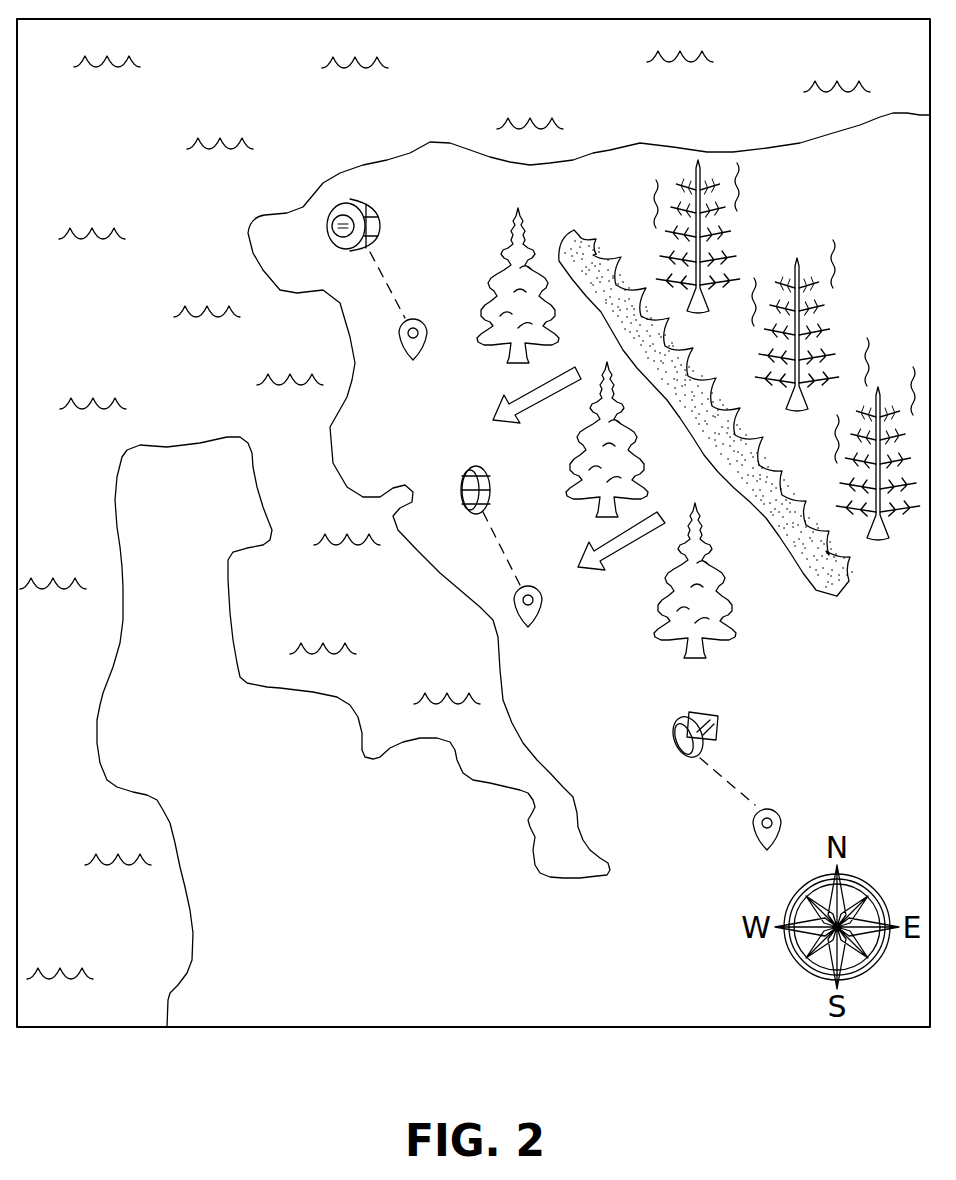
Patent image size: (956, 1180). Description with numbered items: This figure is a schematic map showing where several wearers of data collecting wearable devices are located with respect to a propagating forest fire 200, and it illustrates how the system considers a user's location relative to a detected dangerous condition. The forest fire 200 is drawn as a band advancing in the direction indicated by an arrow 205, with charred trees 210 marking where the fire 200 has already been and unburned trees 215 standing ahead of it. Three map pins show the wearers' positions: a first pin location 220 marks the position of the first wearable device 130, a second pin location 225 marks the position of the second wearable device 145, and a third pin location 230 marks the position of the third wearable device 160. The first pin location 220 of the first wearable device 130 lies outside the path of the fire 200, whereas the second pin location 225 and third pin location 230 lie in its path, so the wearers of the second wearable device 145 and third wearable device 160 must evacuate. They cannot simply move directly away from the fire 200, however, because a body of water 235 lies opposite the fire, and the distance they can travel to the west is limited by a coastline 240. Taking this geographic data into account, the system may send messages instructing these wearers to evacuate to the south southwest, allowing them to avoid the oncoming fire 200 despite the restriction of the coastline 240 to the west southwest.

The first wearable device 130 is at (718, 718).
The second wearable device 145 is at (378, 212).
The third wearable device 160 is at (470, 467).
The forest fire 200 is at (612, 265).
The arrow 205 is at (544, 417).
The charred trees 210 is at (748, 231).
The unburned trees 215 is at (748, 606).
The first pin location 220 is at (783, 823).
The second pin location 225 is at (420, 318).
The third pin location 230 is at (543, 597).
The body of water 235 is at (219, 382).
The coastline 240 is at (327, 427).